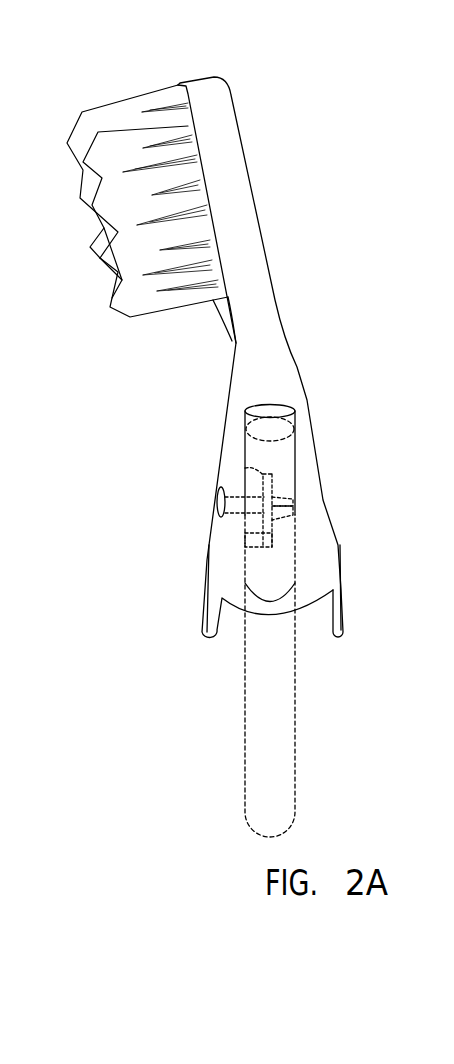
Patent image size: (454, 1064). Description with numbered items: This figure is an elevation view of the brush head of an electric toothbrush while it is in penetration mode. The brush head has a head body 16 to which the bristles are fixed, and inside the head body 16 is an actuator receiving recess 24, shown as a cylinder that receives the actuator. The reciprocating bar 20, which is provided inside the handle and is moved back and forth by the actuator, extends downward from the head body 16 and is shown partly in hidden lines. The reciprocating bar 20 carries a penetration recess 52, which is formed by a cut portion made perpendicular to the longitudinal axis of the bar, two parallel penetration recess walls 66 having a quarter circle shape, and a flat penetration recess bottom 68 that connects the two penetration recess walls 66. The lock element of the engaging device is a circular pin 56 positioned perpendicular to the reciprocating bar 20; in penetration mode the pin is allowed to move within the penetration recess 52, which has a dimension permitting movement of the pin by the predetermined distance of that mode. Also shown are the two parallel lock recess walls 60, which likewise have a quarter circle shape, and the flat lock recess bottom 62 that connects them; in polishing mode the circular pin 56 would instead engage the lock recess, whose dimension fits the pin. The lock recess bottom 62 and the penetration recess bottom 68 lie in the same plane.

The head body 16 is at (282, 368).
The reciprocating bar 20 is at (260, 667).
The actuator receiving recess 24 is at (292, 423).
The penetration recess 52 is at (255, 522).
The circular pin 56 is at (252, 491).
The lock recess walls 60 is at (297, 508).
The lock recess bottom 62 is at (296, 496).
The penetration recess walls 66 is at (246, 577).
The penetration recess bottom 68 is at (255, 481).